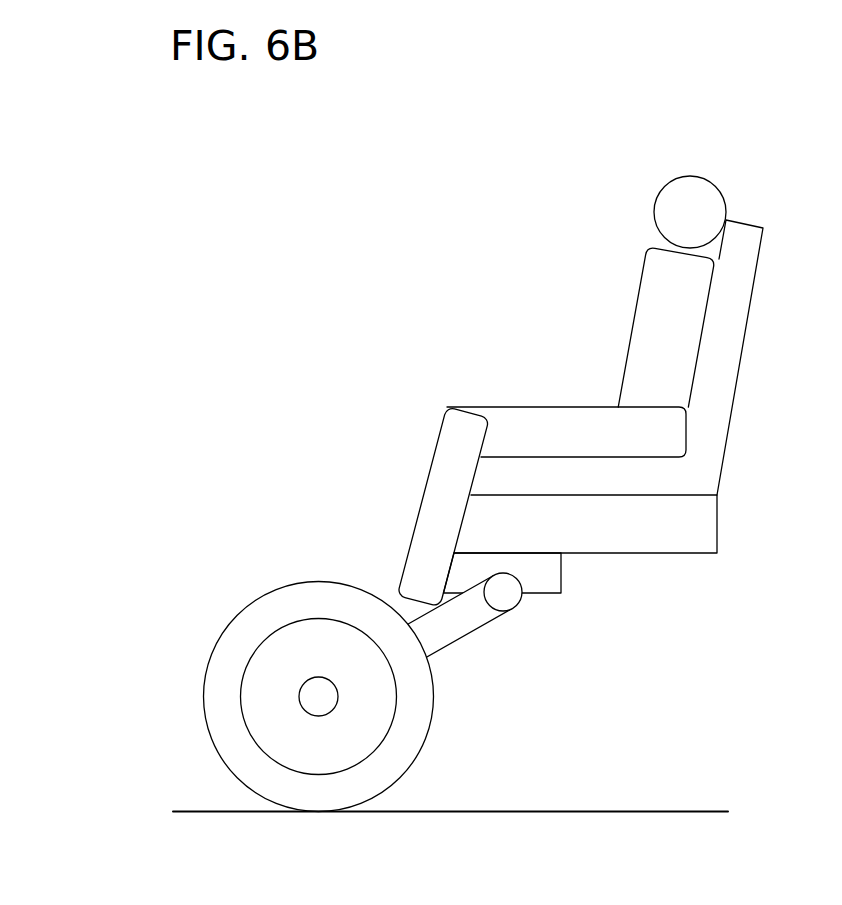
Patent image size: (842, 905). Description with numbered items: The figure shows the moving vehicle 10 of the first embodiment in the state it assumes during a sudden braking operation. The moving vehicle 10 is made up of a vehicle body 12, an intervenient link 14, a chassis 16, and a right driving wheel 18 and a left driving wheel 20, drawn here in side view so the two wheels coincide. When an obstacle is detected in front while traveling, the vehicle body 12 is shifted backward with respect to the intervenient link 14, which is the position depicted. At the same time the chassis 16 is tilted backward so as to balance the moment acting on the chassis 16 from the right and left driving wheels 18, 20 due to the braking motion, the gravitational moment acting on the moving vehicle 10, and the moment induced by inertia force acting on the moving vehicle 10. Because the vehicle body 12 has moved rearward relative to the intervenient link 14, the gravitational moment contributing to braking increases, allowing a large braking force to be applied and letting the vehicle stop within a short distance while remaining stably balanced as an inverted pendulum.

The moving vehicle 10 is at (535, 135).
The vehicle body 12 is at (732, 487).
The intervenient link 14 is at (561, 573).
The chassis 16 is at (493, 622).
The right driving wheel 18 is at (377, 697).
The left driving wheel 20 is at (435, 695).